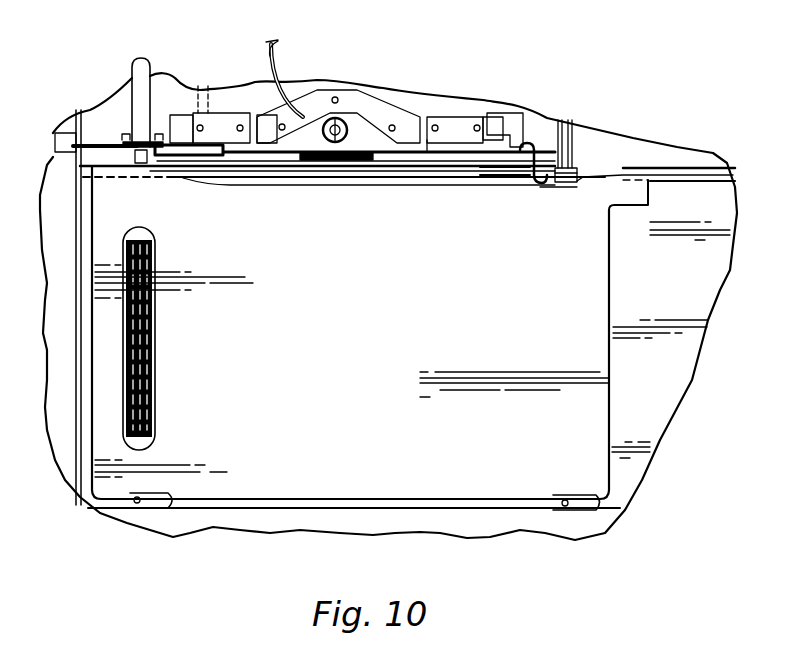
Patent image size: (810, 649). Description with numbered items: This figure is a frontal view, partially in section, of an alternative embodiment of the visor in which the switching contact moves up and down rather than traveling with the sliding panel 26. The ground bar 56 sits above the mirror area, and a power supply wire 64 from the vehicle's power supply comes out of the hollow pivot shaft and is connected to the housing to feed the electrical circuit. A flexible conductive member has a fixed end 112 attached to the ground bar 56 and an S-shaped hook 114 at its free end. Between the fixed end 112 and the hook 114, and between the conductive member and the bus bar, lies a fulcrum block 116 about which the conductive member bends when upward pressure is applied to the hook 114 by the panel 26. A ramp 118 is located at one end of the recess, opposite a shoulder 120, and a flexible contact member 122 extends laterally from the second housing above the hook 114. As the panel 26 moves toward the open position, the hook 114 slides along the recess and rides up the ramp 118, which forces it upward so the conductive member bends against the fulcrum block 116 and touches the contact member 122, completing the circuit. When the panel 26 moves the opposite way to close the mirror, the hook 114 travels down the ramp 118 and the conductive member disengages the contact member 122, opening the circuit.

The panel 26 is at (572, 468).
The ground bar 56 is at (150, 77).
The power supply wire 64 is at (283, 60).
The fixed end 112 is at (160, 143).
The S-shaped hook 114 is at (530, 143).
The fulcrum block 116 is at (360, 150).
The ramp 118 is at (173, 177).
The shoulder 120 is at (583, 175).
The flexible contact member 122 is at (518, 130).